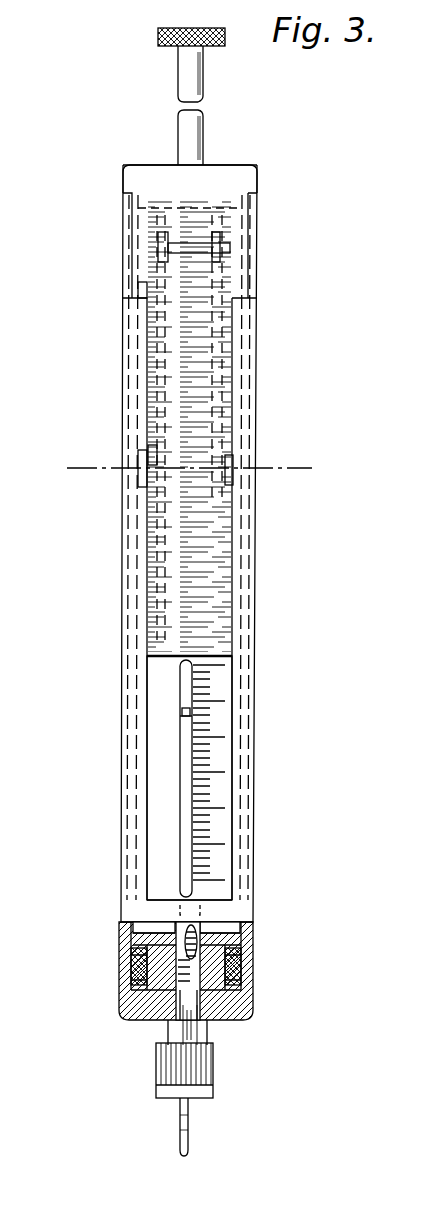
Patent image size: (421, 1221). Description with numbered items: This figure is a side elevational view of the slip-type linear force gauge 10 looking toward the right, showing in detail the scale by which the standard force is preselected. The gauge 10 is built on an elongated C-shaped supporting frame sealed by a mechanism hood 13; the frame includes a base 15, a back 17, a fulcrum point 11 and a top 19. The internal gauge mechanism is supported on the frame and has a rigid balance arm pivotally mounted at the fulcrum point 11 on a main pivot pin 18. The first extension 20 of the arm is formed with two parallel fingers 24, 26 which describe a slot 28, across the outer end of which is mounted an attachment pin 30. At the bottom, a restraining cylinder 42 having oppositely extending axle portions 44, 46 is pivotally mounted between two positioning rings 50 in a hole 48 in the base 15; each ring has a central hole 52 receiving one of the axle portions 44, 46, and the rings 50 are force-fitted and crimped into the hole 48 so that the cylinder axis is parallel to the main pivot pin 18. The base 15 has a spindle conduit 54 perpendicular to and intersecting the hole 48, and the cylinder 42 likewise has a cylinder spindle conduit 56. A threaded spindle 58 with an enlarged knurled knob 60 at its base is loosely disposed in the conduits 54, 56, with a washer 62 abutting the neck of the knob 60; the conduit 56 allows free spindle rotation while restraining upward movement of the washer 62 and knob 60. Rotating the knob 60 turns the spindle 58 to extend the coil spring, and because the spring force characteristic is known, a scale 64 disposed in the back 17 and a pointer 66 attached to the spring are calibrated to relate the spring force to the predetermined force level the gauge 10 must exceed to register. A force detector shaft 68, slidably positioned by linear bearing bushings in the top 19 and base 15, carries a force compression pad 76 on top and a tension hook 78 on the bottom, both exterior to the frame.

The slip-type linear force gauge 10 is at (105, 150).
The fulcrum point 11 is at (290, 468).
The mechanism hood 13 is at (255, 612).
The base 15 is at (138, 1020).
The back 17 is at (170, 572).
The main pivot pin 18 is at (140, 495).
The top 19 is at (236, 172).
The first extension 20 is at (156, 293).
The finger 24 is at (260, 318).
The finger 26 is at (131, 330).
The slot 28 is at (200, 326).
The attachment pin 30 is at (150, 240).
The restraining cylinder 42 is at (205, 1005).
The axle portion 44 is at (125, 968).
The axle portion 46 is at (250, 972).
The hole 48 is at (125, 928).
The positioning rings 50 is at (120, 990).
The central hole 52 is at (128, 956).
The spindle conduit 54 is at (160, 925).
The cylinder spindle conduit 56 is at (200, 935).
The threaded spindle 58 is at (242, 896).
The knurled knob 60 is at (213, 1078).
The washer 62 is at (195, 1022).
The scale 64 is at (213, 770).
The pointer 66 is at (180, 713).
The force detector shaft 68 is at (205, 128).
The force compression pad 76 is at (158, 37).
The tension hook 78 is at (188, 1148).